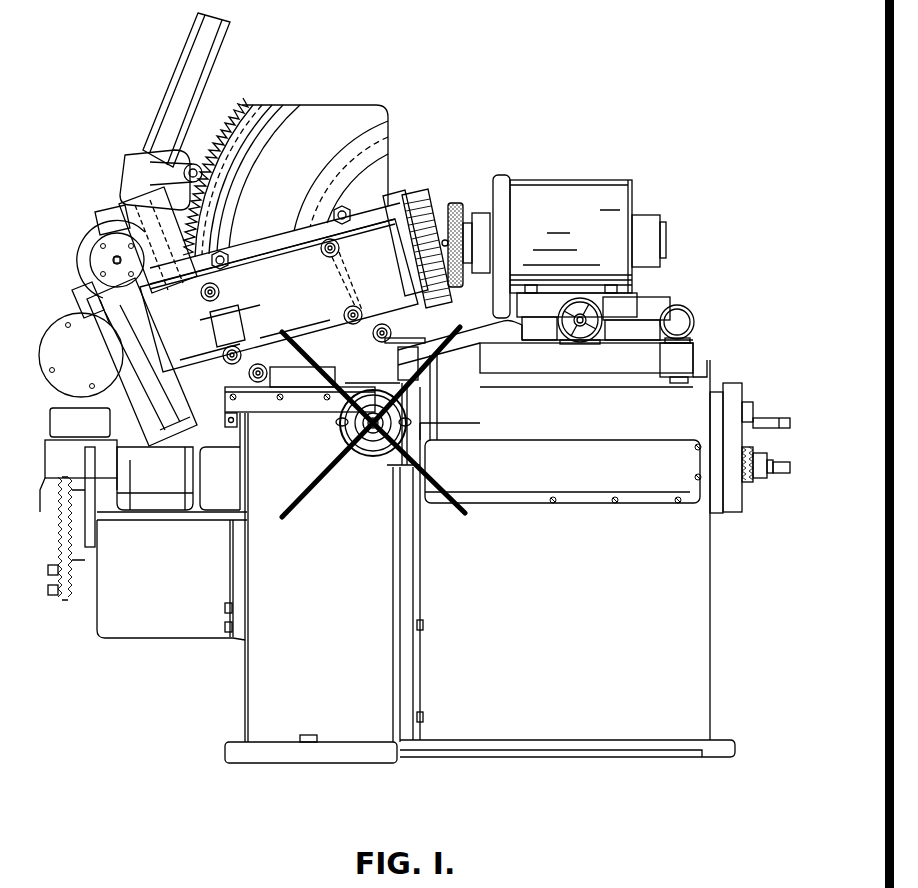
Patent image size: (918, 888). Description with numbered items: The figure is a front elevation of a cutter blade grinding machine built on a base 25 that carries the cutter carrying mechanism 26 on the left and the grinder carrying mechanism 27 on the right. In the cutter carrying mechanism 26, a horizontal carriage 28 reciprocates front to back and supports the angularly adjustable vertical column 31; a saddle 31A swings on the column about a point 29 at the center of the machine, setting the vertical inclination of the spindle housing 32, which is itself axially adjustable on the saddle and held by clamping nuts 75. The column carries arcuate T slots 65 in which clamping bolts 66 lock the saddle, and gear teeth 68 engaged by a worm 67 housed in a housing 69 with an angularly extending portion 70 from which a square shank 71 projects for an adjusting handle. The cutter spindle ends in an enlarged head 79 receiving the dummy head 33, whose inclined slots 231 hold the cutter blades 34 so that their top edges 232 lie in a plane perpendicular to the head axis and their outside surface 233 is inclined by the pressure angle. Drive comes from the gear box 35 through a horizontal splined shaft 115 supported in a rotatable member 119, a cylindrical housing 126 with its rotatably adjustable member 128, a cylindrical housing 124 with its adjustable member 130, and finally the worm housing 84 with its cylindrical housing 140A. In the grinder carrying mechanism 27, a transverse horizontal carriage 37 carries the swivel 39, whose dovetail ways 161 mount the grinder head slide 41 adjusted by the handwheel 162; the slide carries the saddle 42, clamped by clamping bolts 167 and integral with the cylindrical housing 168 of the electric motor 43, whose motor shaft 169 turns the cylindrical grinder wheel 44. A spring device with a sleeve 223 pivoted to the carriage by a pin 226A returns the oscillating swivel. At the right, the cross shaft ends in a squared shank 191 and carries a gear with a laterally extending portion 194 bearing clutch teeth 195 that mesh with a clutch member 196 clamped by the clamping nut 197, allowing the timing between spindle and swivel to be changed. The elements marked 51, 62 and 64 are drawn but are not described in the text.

The base 25 is at (455, 722).
The cutter carrying mechanism 26 is at (83, 198).
The grinder carrying mechanism 27 is at (703, 258).
The horizontal carriage 28 is at (305, 395).
The point 29 is at (448, 215).
The vertical column 31 is at (344, 115).
The saddle 31A is at (238, 258).
The spindle housing 32 is at (300, 277).
The dummy head 33 is at (405, 250).
The cutter blades 34 is at (438, 240).
The gear box 35 is at (148, 622).
The horizontal carriage 37 is at (640, 358).
The swivel 39 is at (500, 330).
The grinder head slide 41 is at (628, 310).
The saddle 42 is at (557, 293).
The electric motor 43 is at (610, 205).
The cylindrical grinder wheel 44 is at (456, 203).
The housing cover 51 is at (437, 482).
The handwheel 62 is at (385, 442).
The bracket 64 is at (437, 378).
The arcuate T slots 65 is at (262, 108).
The clamping bolts 66 is at (227, 248).
The worm 67 is at (177, 335).
The gear teeth 68 is at (230, 97).
The housing 69 is at (129, 226).
The angularly extending portion 70 is at (167, 173).
The square shank 71 is at (193, 165).
The clamping nuts 75 is at (222, 293).
The enlarged head 79 is at (412, 300).
The housing 84 is at (97, 253).
The horizontal splined shaft 115 is at (158, 483).
The rotatable member 119 is at (168, 470).
The cylindrical housing 124 is at (56, 333).
The cylindrical housing 126 is at (63, 438).
The member 128 is at (55, 470).
The member 130 is at (72, 300).
The cylindrical housing 140A is at (92, 237).
The dovetail ways 161 is at (557, 314).
The handwheel 162 is at (578, 342).
The clamping bolts 167 is at (627, 278).
The cylindrical housing 168 is at (530, 193).
The motor shaft 169 is at (663, 228).
The squared shank 191 is at (783, 473).
The laterally extending portion 194 is at (745, 473).
The clutch teeth 195 is at (745, 490).
The clutch member 196 is at (750, 460).
The clamping nut 197 is at (768, 476).
The sleeve 223 is at (694, 314).
The pin 226A is at (675, 381).
The slots 231 is at (393, 227).
The top edges 232 is at (441, 232).
The outside surface 233 is at (420, 200).